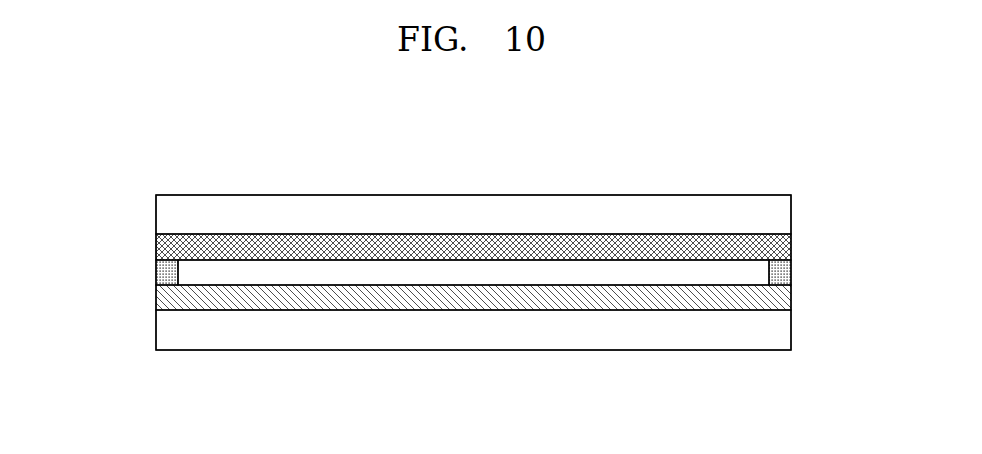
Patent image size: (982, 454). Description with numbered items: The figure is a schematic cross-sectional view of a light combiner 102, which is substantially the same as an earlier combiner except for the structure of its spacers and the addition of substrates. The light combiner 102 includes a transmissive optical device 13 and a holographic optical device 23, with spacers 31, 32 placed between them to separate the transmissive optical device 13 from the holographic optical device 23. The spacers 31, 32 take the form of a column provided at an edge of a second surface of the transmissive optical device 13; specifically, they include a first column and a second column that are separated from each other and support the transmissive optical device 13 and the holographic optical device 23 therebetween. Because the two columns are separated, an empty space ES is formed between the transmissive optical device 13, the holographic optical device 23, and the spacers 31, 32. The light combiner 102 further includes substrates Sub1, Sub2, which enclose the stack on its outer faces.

The light combiner 102 is at (747, 181).
The substrate Sub2 is at (156, 209).
The holographic optical device 23 is at (792, 247).
The empty space ES is at (489, 273).
The spacer 31 is at (156, 272).
The spacer 32 is at (792, 275).
The transmissive optical device 13 is at (792, 301).
The substrate Sub1 is at (156, 328).